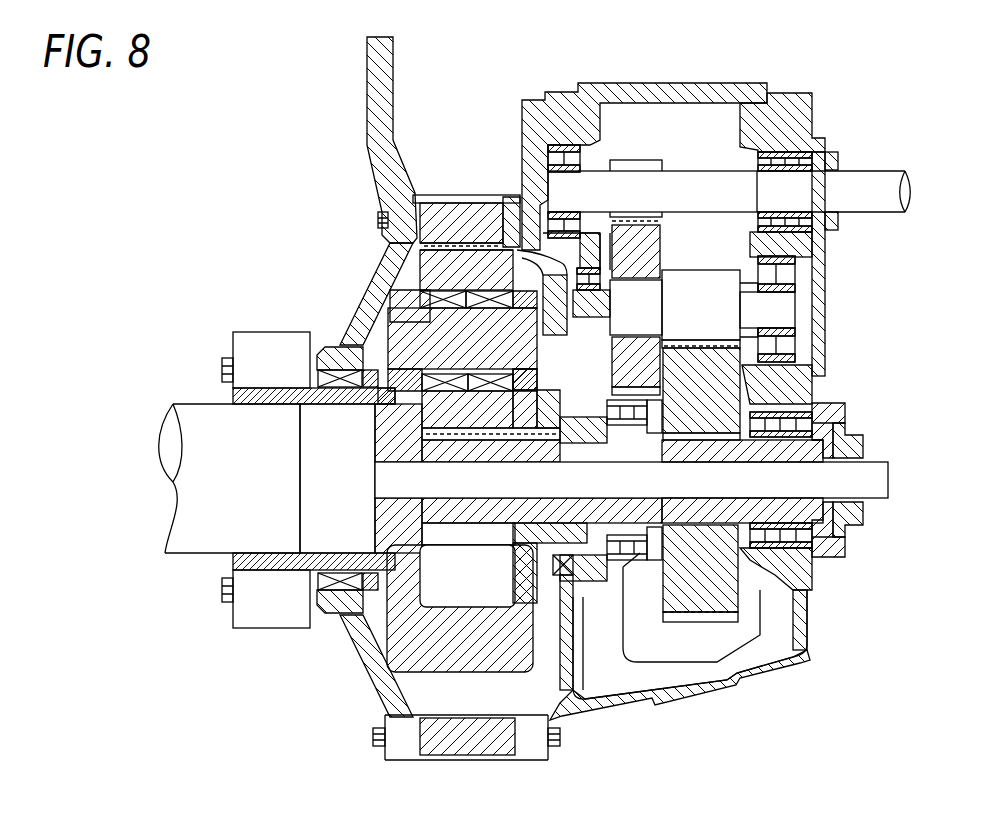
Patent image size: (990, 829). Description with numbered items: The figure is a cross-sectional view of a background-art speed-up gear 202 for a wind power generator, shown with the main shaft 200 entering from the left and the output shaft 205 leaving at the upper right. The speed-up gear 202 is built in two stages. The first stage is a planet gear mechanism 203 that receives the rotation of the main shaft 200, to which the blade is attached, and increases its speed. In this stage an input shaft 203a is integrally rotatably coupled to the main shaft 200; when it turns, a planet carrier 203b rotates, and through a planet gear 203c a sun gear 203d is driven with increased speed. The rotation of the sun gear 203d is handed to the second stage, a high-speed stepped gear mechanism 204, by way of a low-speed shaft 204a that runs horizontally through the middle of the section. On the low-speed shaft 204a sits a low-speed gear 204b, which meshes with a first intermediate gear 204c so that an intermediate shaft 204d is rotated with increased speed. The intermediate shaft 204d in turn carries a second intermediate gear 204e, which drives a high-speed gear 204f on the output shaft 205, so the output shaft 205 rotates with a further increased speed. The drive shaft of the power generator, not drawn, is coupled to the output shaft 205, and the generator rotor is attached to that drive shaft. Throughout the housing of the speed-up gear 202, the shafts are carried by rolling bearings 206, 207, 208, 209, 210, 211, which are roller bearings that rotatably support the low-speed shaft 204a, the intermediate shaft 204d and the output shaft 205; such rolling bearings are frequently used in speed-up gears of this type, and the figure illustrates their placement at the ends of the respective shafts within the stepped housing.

The main shaft 200 is at (185, 508).
The speed-up gear 202 is at (572, 732).
The planet gear mechanism 203 is at (410, 277).
The input shaft 203a is at (245, 395).
The planet carrier 203b is at (395, 385).
The planet gear 203c is at (393, 248).
The sun gear 203d is at (440, 515).
The high-speed stepped gear mechanism 204 is at (703, 627).
The low-speed shaft 204a is at (820, 452).
The low-speed gear 204b is at (742, 618).
The first intermediate gear 204c is at (720, 302).
The intermediate shaft 204d is at (780, 308).
The second intermediate gear 204e is at (650, 235).
The high-speed gear 204f is at (640, 175).
The output shaft 205 is at (870, 178).
The rolling bearing 206 is at (640, 556).
The rolling bearing 207 is at (745, 555).
The rolling bearing 208 is at (505, 258).
The rolling bearing 209 is at (795, 358).
The rolling bearing 210 is at (533, 142).
The rolling bearing 211 is at (800, 152).